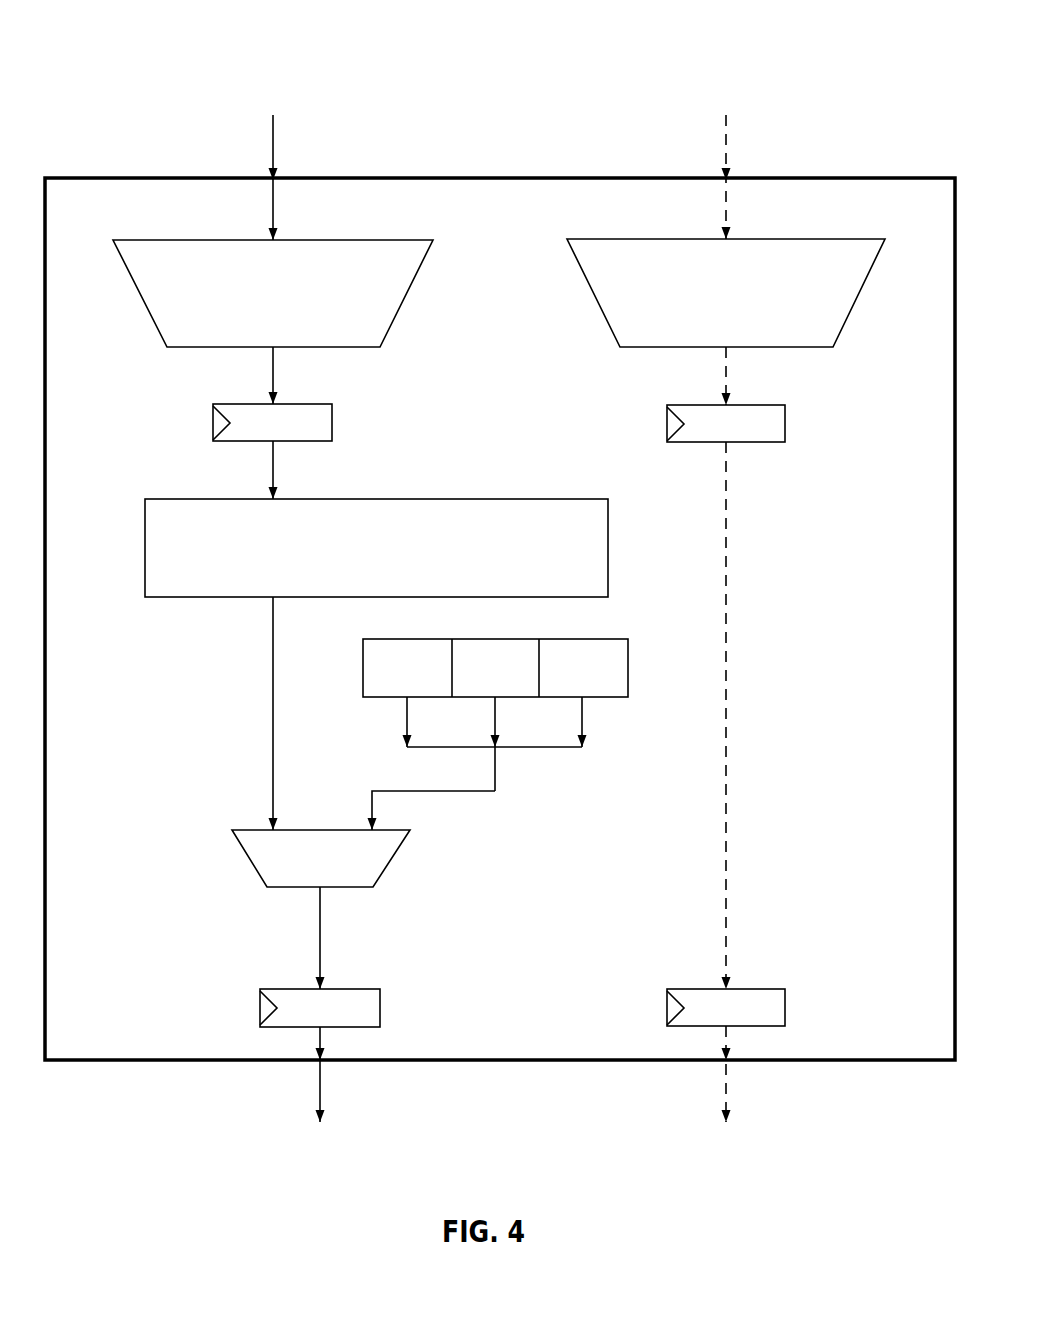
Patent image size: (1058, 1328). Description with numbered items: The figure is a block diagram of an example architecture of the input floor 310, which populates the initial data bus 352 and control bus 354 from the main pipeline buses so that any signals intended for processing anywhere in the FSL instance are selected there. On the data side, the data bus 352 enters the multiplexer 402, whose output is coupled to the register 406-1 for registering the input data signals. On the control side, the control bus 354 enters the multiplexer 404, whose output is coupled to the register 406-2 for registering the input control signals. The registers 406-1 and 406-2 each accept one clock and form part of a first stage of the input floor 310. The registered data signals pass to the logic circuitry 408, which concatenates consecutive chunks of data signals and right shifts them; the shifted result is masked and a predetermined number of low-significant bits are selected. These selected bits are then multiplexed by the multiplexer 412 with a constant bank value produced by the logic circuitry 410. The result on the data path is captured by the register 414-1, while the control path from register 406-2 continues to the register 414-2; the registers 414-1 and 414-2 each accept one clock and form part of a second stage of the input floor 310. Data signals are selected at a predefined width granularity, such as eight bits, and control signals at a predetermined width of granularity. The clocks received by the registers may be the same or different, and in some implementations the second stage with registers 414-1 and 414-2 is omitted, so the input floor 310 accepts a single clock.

The input floor 310 is at (840, 34).
The data bus 352 is at (275, 150).
The control bus 354 is at (728, 150).
The multiplexer 402 is at (385, 239).
The multiplexer 404 is at (838, 238).
The register 406-1 is at (300, 403).
The register 406-2 is at (753, 404).
The logic circuitry 408 is at (550, 498).
The logic circuitry 410 is at (603, 636).
The multiplexer 412 is at (393, 860).
The register 414-1 is at (357, 988).
The register 414-2 is at (757, 988).